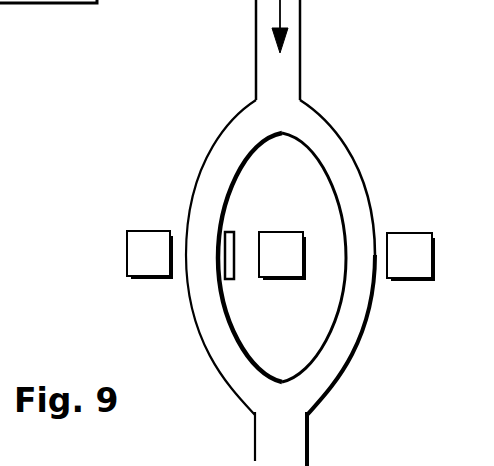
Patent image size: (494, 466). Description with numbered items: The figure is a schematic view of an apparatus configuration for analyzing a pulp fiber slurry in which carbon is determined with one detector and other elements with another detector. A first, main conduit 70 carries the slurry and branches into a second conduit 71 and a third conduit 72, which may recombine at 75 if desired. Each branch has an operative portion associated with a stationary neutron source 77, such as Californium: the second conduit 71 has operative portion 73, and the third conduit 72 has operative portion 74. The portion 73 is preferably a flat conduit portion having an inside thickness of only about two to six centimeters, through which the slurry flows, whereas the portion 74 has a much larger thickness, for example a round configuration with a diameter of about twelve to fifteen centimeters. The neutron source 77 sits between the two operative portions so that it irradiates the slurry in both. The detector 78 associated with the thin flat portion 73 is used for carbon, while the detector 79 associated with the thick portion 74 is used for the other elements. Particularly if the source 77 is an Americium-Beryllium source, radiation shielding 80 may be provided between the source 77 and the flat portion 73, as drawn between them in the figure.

The main conduit 70 is at (290, 71).
The second conduit 71 is at (218, 153).
The third conduit 72 is at (322, 130).
The operative portion of second conduit 73 is at (197, 299).
The operative portion of third conduit 74 is at (360, 224).
The recombination point 75 is at (290, 433).
The stationary neutron source 77 is at (282, 250).
The carbon detector 78 is at (147, 247).
The detector for other elements 79 is at (413, 260).
The radiation shielding 80 is at (228, 232).